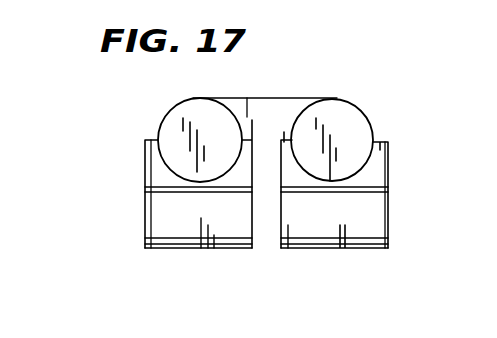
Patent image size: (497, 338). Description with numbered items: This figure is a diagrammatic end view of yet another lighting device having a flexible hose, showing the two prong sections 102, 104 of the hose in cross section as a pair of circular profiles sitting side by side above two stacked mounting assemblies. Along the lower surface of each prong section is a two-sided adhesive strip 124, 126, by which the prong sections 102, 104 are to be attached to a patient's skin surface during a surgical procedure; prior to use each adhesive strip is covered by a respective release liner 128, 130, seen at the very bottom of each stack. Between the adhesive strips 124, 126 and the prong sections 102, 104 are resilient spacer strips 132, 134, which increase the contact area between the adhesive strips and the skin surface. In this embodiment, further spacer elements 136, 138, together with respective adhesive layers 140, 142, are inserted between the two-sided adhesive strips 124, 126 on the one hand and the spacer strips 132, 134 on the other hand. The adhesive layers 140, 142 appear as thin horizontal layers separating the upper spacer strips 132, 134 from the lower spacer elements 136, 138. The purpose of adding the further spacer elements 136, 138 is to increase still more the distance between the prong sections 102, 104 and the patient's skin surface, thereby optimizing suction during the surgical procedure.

The prong section 102 is at (167, 126).
The prong section 104 is at (341, 110).
The two-sided adhesive strip 124 is at (146, 251).
The two-sided adhesive strip 126 is at (310, 259).
The release liner 128 is at (177, 276).
The release liner 130 is at (338, 269).
The resilient spacer strip 132 is at (153, 184).
The resilient spacer strip 134 is at (359, 169).
The further spacer element 136 is at (99, 194).
The further spacer element 138 is at (415, 206).
The adhesive layer 140 is at (148, 177).
The adhesive layer 142 is at (367, 168).